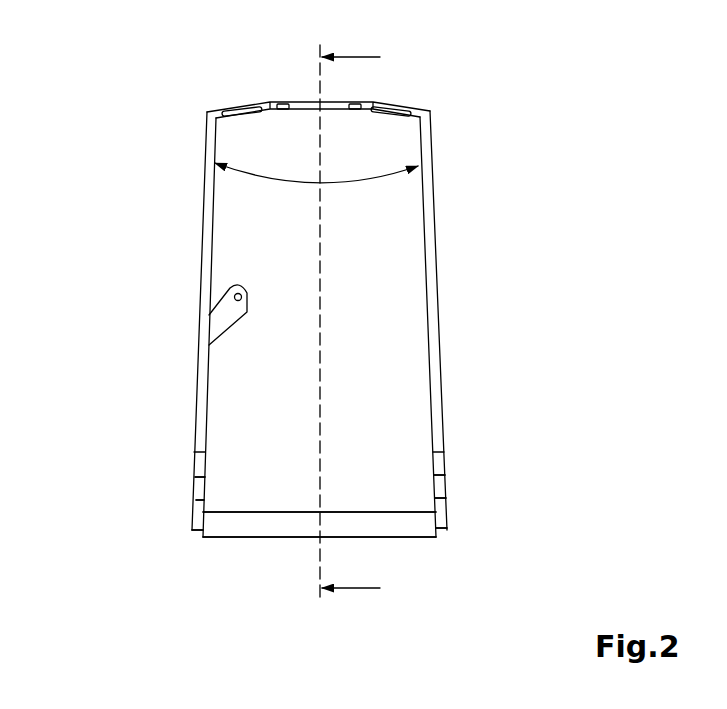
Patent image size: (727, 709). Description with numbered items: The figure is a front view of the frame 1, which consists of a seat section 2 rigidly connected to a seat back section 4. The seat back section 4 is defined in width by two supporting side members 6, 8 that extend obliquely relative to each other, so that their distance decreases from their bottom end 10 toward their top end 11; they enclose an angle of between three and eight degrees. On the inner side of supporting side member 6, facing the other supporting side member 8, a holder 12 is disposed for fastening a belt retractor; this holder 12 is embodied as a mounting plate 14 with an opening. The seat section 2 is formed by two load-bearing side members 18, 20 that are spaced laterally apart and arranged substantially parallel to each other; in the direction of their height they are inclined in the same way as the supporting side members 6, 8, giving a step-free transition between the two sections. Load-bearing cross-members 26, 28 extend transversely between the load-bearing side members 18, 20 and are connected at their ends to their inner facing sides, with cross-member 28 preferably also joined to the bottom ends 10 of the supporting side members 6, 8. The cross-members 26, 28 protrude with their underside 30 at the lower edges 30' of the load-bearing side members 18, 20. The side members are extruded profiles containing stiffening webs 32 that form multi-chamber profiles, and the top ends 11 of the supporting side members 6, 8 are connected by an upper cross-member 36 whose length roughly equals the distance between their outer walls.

The frame 1 is at (569, 289).
The seat section 2 is at (422, 564).
The seat back section 4 is at (142, 287).
The supporting side member 6 is at (205, 158).
The supporting side member 8 is at (437, 223).
The bottom end 10 is at (184, 539).
The top end 11 is at (256, 77).
The holder 12 is at (255, 341).
The mounting plate 14 is at (232, 310).
The load-bearing side member 18 is at (190, 468).
The load-bearing side member 20 is at (447, 462).
The load-bearing cross-member 26 is at (232, 527).
The load-bearing cross-member 28 is at (232, 527).
The underside 30 is at (319, 577).
The lower edge 30' is at (480, 557).
The stiffening web 32 is at (193, 503).
The upper cross-member 36 is at (298, 103).